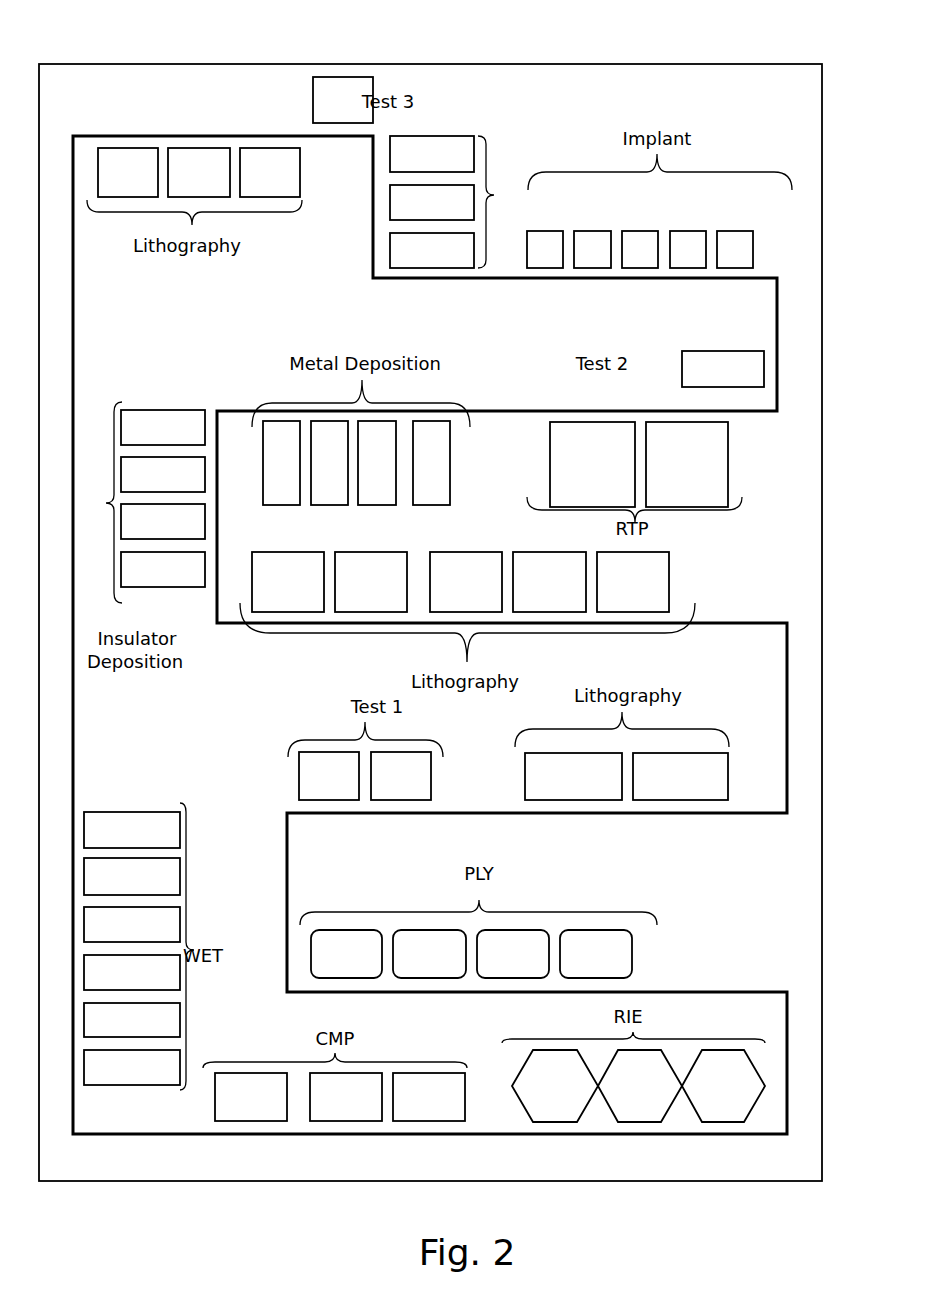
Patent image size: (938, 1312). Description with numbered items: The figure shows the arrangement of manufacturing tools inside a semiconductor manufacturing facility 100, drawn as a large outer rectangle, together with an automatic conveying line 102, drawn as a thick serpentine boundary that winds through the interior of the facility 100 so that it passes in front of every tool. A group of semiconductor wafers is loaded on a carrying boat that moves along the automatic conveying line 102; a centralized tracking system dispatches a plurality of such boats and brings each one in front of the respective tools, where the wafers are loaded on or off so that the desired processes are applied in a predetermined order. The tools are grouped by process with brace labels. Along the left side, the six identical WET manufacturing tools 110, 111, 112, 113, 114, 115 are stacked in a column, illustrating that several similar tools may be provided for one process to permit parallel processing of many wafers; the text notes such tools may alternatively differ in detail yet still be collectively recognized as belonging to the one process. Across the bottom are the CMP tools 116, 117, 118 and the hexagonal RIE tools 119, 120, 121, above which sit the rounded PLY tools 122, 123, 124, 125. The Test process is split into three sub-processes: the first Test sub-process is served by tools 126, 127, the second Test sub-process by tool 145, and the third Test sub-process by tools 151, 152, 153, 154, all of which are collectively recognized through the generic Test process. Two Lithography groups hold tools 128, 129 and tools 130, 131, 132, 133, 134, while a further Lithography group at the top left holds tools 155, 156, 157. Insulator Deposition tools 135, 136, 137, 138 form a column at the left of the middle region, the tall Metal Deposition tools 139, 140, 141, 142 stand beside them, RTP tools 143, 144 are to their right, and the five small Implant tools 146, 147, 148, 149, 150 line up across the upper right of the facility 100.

The semiconductor manufacturing facility 100 is at (717, 90).
The automatic conveying line 102 is at (777, 327).
The manufacturing tool 110 is at (132, 830).
The manufacturing tool 111 is at (132, 876).
The manufacturing tool 112 is at (132, 924).
The manufacturing tool 113 is at (132, 972).
The manufacturing tool 114 is at (132, 1020).
The manufacturing tool 115 is at (132, 1067).
The manufacturing tool 116 is at (251, 1097).
The manufacturing tool 117 is at (346, 1097).
The manufacturing tool 118 is at (429, 1097).
The manufacturing tool 119 is at (555, 1086).
The manufacturing tool 120 is at (640, 1086).
The manufacturing tool 121 is at (723, 1086).
The manufacturing tool 122 is at (346, 954).
The manufacturing tool 123 is at (429, 954).
The manufacturing tool 124 is at (513, 954).
The manufacturing tool 125 is at (596, 954).
The manufacturing tool 126 is at (329, 776).
The manufacturing tool 127 is at (401, 776).
The manufacturing tool 128 is at (573, 776).
The manufacturing tool 129 is at (680, 776).
The manufacturing tool 130 is at (288, 582).
The manufacturing tool 131 is at (371, 582).
The manufacturing tool 132 is at (466, 582).
The manufacturing tool 133 is at (549, 582).
The manufacturing tool 134 is at (633, 582).
The manufacturing tool 135 is at (163, 427).
The manufacturing tool 136 is at (163, 474).
The manufacturing tool 137 is at (163, 521).
The manufacturing tool 138 is at (163, 569).
The manufacturing tool 139 is at (281, 463).
The manufacturing tool 140 is at (329, 463).
The manufacturing tool 141 is at (377, 463).
The manufacturing tool 142 is at (431, 463).
The manufacturing tool 143 is at (592, 464).
The manufacturing tool 144 is at (687, 464).
The manufacturing tool 145 is at (723, 369).
The manufacturing tool 146 is at (542, 243).
The manufacturing tool 147 is at (590, 243).
The manufacturing tool 148 is at (637, 243).
The manufacturing tool 149 is at (685, 243).
The manufacturing tool 150 is at (733, 243).
The manufacturing tool 151 is at (432, 154).
The manufacturing tool 152 is at (432, 202).
The manufacturing tool 153 is at (432, 250).
The manufacturing tool 154 is at (343, 100).
The manufacturing tool 155 is at (128, 172).
The manufacturing tool 156 is at (199, 172).
The manufacturing tool 157 is at (270, 172).